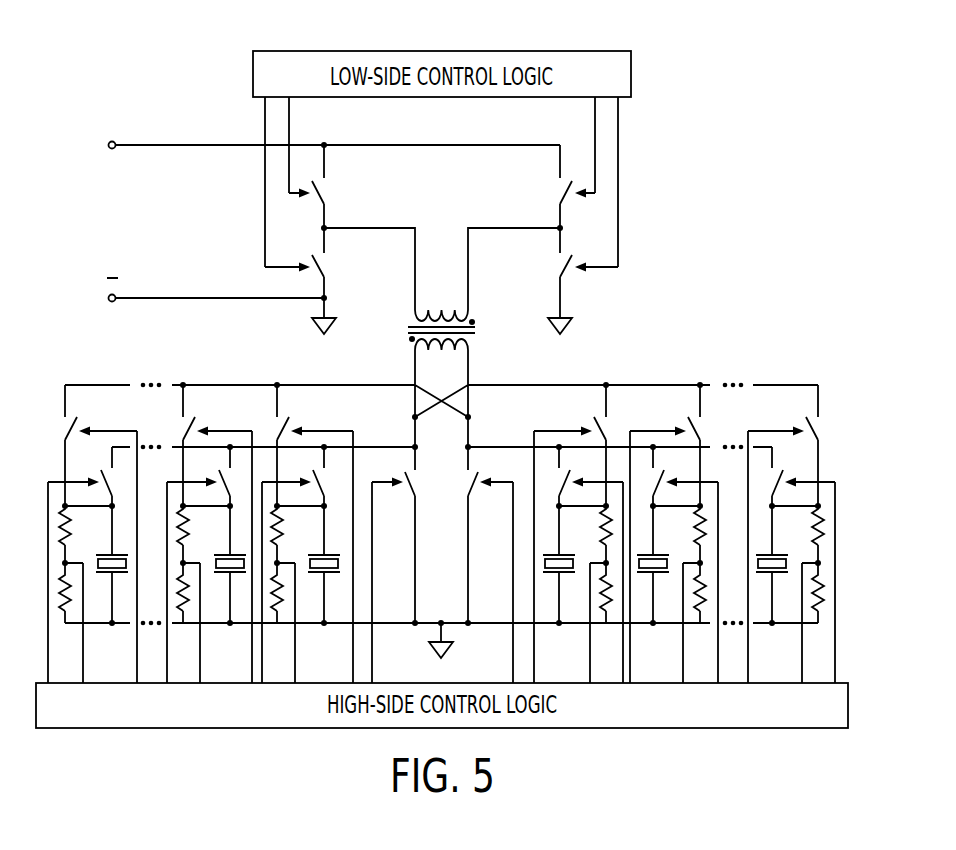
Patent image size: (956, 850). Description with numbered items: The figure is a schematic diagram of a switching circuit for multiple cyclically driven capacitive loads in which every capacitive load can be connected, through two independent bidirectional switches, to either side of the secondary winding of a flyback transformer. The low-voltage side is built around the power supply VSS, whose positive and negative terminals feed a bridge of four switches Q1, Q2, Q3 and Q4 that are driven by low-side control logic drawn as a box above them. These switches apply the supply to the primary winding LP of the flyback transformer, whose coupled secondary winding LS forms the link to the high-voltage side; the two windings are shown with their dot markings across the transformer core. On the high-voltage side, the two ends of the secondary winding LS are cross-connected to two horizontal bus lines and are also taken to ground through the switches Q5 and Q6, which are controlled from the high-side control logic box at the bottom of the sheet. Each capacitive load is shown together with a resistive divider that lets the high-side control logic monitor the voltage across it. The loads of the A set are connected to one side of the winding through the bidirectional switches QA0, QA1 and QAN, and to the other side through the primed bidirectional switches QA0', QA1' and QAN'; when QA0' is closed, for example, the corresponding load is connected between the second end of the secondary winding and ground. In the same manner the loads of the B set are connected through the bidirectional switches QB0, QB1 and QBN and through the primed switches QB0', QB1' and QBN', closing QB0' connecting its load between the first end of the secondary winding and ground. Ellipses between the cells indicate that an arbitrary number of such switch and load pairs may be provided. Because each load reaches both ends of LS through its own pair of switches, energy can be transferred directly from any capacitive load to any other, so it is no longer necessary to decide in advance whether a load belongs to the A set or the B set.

The switch Q1 is at (319, 186).
The switch Q2 is at (565, 186).
The switch Q3 is at (307, 281).
The switch Q4 is at (576, 281).
The switch Q5 is at (405, 565).
The switch Q6 is at (478, 565).
The primary winding inductance LP is at (442, 280).
The secondary winding LS is at (440, 391).
The power supply VSS is at (333, 222).
The bidirectional switch QAN' is at (83, 534).
The bidirectional switch QA1' is at (198, 534).
The bidirectional switch QA0' is at (301, 534).
The bidirectional switch QAN is at (99, 565).
The bidirectional switch QA1 is at (215, 565).
The bidirectional switch QA0 is at (311, 565).
The bidirectional switch QB0' is at (587, 534).
The bidirectional switch QB1' is at (682, 534).
The bidirectional switch QBN' is at (801, 534).
The bidirectional switch QB0 is at (572, 565).
The bidirectional switch QB1 is at (671, 565).
The bidirectional switch QBN is at (784, 565).